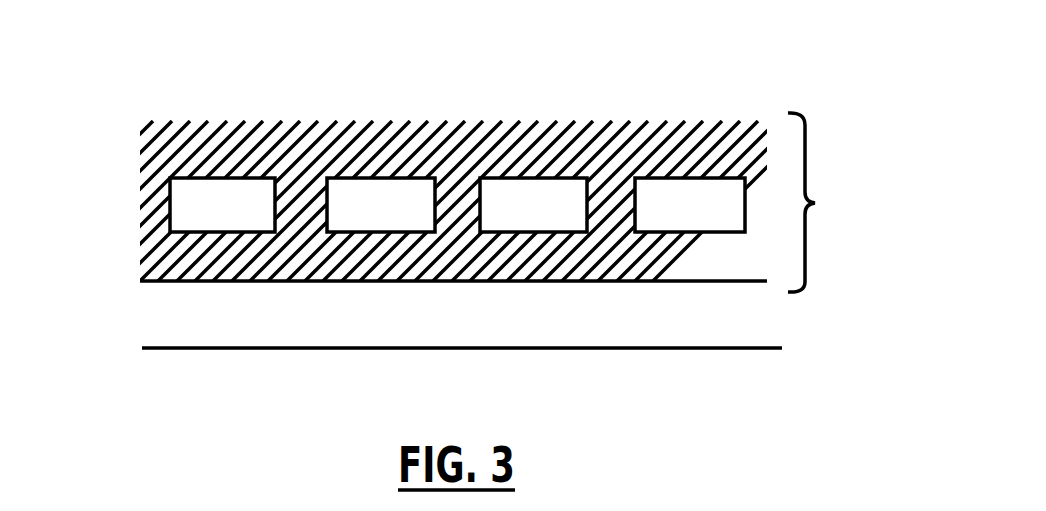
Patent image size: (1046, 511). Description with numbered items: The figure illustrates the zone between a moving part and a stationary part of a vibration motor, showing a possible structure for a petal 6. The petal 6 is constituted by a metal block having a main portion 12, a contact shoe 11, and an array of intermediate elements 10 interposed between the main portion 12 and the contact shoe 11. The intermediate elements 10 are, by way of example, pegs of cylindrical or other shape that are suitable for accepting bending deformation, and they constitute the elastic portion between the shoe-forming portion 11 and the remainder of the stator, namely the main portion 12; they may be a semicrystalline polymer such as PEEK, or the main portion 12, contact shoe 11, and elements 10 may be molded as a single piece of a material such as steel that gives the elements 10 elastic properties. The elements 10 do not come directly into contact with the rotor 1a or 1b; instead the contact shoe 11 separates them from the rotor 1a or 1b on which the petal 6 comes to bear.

The petal 6 is at (825, 202).
The main portion 12 is at (138, 110).
The contact shoe 11 is at (120, 264).
The intermediate elements 10 is at (300, 203).
The rotor 1a is at (475, 378).
The rotor 1b is at (717, 349).